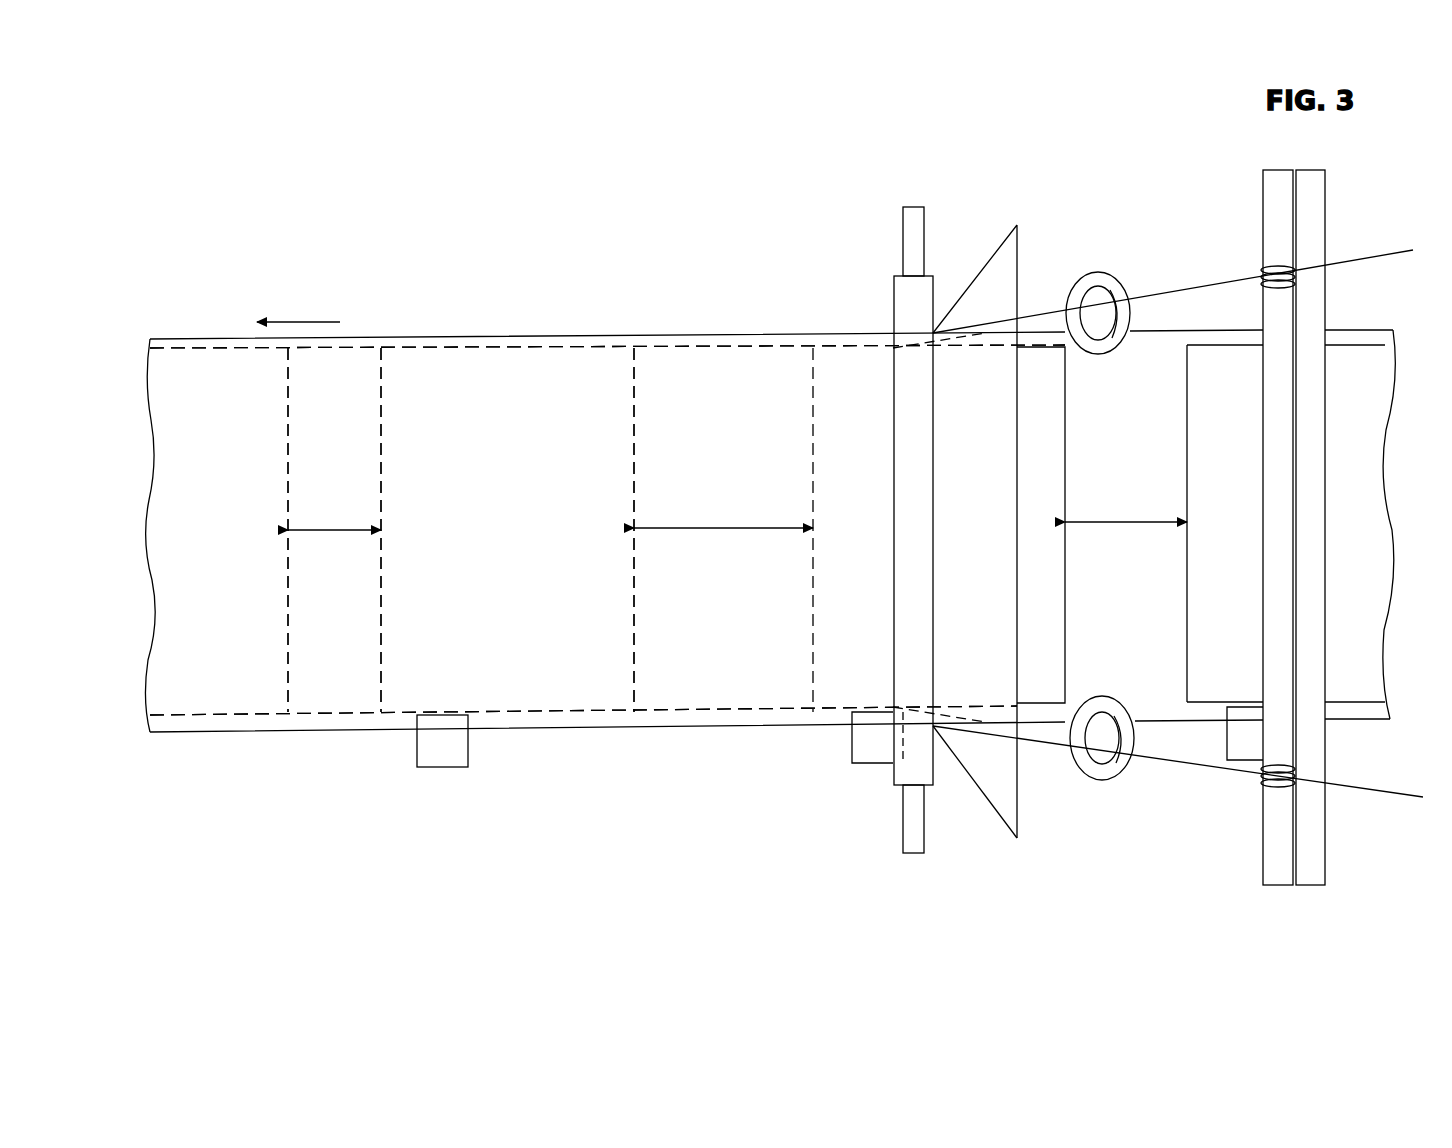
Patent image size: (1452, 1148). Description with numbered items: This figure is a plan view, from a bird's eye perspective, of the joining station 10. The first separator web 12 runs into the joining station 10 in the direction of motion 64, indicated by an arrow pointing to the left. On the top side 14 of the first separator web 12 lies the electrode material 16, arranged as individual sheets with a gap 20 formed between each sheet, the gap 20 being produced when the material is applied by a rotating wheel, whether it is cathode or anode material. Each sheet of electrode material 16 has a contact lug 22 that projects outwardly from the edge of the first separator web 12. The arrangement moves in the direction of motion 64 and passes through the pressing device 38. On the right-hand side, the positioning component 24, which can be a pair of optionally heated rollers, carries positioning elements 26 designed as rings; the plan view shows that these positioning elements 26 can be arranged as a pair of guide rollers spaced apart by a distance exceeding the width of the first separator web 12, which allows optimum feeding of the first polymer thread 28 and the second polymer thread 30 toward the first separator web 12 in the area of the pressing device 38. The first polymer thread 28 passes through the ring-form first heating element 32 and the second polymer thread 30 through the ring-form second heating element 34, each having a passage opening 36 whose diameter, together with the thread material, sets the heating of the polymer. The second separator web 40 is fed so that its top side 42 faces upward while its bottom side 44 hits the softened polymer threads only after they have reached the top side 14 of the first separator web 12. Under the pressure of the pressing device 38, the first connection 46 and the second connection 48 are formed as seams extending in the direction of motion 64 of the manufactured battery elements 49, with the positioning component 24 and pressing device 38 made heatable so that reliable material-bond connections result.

The joining station 10 is at (946, 188).
The first separator web 12 is at (1210, 337).
The top side of the first separator web 14 is at (1163, 372).
The electrode material 16 is at (775, 528).
The gap 20 is at (334, 528).
The contact lug 22 is at (439, 750).
The positioning component 24 is at (1313, 878).
The positioning elements 26 is at (1283, 265).
The first polymer thread 28 is at (1400, 250).
The second polymer thread 30 is at (1405, 798).
The first heating element 32 is at (1115, 290).
The second heating element 34 is at (1122, 768).
The passage opening 36 is at (1097, 290).
The pressing device 38 is at (905, 290).
The second separator web 40 is at (965, 300).
The top side of the second separator web 42 is at (735, 388).
The bottom side of the second separator web 44 is at (1020, 790).
The first connection 46 is at (668, 345).
The second connection 48 is at (668, 712).
The battery elements 49 is at (210, 388).
The direction of motion 64 is at (300, 322).